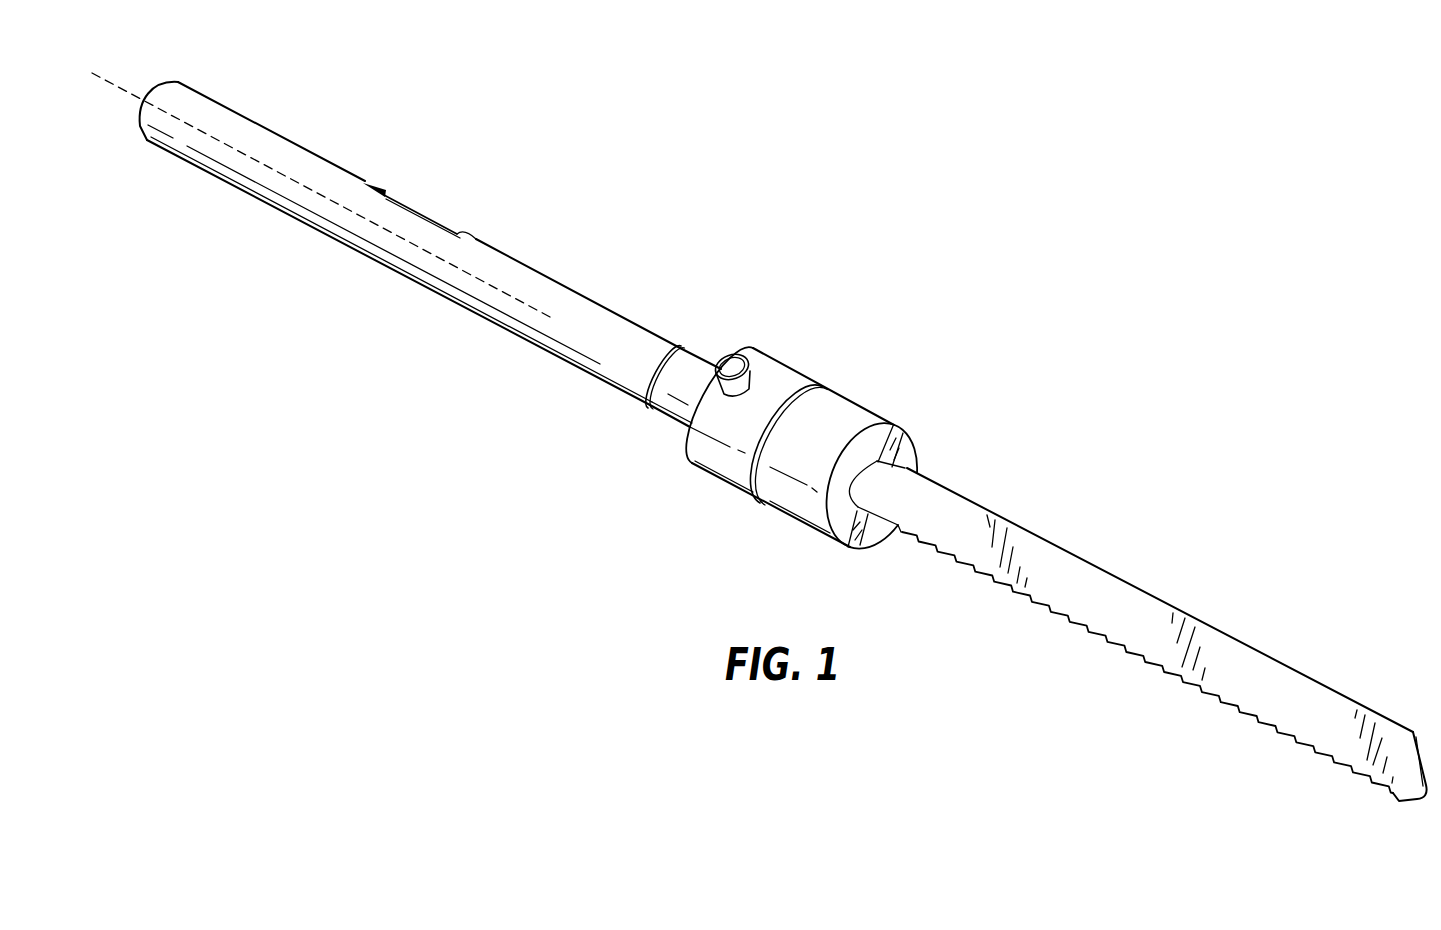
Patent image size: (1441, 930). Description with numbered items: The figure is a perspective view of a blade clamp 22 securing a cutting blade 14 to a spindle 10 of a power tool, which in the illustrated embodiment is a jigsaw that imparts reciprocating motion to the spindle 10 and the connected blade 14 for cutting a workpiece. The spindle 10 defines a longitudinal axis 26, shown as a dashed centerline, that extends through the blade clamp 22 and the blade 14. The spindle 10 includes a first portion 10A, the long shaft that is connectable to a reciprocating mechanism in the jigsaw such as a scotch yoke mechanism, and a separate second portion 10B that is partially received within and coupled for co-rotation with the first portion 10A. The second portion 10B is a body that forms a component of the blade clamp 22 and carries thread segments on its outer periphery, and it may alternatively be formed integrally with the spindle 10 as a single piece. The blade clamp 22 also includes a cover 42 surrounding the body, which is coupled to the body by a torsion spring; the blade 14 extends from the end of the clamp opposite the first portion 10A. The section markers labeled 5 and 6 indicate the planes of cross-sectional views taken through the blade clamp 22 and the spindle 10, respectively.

The spindle 10 is at (620, 229).
The first portion 10A is at (508, 272).
The second portion 10B is at (700, 362).
The cutting blade 14 is at (1248, 672).
The blade clamp 22 is at (928, 352).
The longitudinal axis 26 is at (212, 139).
The cover 42 is at (715, 473).
The section line 5- 5 is at (885, 362).
The section line 6- 6 is at (688, 390).